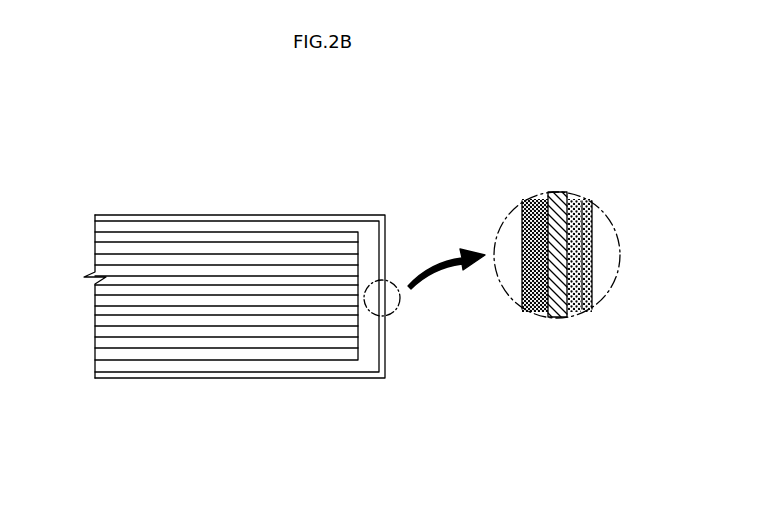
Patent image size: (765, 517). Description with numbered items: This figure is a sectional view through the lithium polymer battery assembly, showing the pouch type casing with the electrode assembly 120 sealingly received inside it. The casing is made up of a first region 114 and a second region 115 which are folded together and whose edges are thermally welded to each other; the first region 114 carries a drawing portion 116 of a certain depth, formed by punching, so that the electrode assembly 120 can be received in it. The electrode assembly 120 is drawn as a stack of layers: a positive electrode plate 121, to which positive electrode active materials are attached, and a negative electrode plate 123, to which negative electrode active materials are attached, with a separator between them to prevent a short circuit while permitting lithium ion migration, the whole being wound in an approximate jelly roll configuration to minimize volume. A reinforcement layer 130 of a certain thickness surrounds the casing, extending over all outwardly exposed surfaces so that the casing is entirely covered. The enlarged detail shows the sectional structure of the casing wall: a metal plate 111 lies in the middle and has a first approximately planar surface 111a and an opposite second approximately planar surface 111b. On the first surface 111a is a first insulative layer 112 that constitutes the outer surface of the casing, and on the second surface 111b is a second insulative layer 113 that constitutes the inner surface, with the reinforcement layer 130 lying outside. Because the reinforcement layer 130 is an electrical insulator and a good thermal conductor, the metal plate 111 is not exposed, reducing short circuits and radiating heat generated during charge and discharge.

The first region 114 is at (251, 193).
The second region 115 is at (312, 373).
The drawing portion 116 is at (170, 234).
The electrode assembly 120 is at (216, 360).
The positive electrode plate 121 is at (118, 353).
The negative electrode plate 123 is at (192, 335).
The reinforcement layer 130 is at (317, 214).
The metal plate 111 is at (560, 319).
The first surface 111a is at (579, 202).
The second surface 111b is at (549, 203).
The first insulative layer 112 is at (576, 316).
The second insulative layer 113 is at (535, 314).